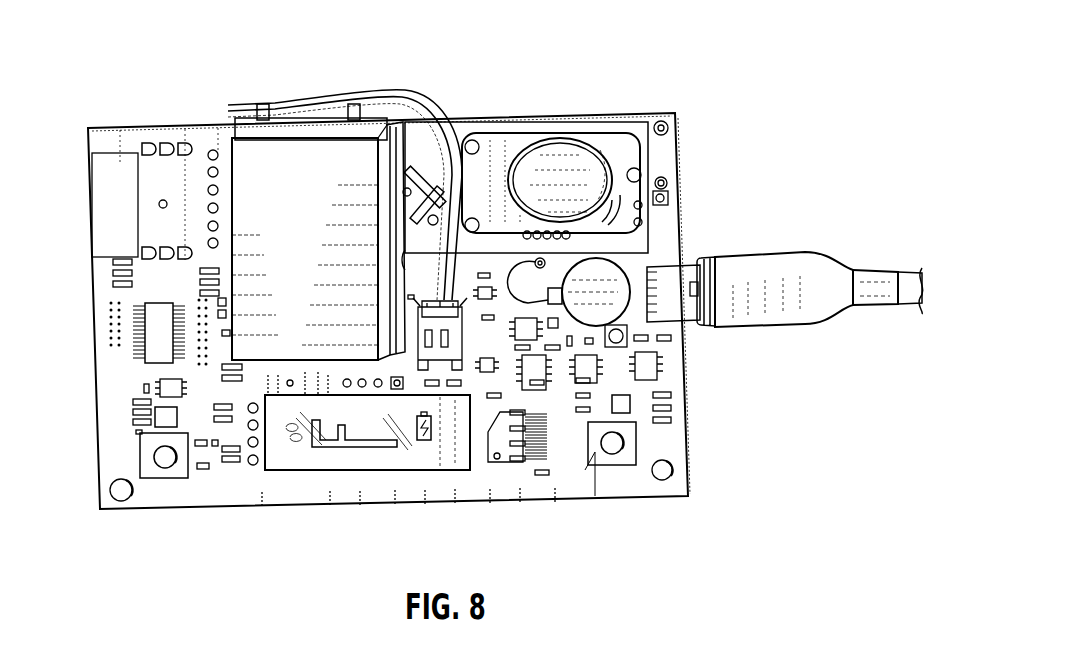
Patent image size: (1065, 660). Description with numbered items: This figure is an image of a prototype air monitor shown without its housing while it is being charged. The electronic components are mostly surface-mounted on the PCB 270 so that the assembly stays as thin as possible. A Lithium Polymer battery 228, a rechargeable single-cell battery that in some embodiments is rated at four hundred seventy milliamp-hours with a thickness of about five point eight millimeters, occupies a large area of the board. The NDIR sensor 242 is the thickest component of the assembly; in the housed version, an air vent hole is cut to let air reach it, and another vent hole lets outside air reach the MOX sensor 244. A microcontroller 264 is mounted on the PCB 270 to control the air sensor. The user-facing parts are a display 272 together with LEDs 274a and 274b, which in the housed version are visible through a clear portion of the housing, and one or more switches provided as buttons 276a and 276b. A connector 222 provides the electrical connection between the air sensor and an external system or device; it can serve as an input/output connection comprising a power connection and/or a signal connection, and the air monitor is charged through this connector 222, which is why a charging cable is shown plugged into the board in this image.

The PCB 270 is at (102, 149).
The Lithium Polymer battery 228 is at (275, 170).
The NDIR sensor 242 is at (558, 160).
The connector 222 is at (668, 290).
The MOX sensor 244 is at (600, 292).
The microcontroller 264 is at (148, 335).
The LED 274a is at (158, 417).
The button 276a is at (162, 457).
The display 272 is at (345, 445).
The LED 274b is at (625, 405).
The button 276b is at (614, 443).